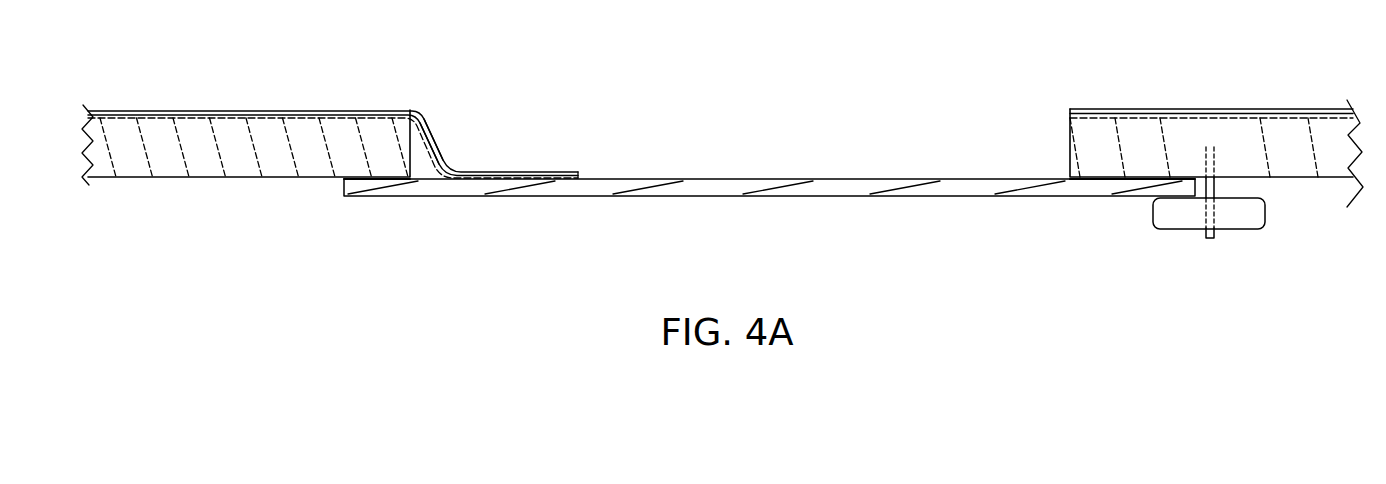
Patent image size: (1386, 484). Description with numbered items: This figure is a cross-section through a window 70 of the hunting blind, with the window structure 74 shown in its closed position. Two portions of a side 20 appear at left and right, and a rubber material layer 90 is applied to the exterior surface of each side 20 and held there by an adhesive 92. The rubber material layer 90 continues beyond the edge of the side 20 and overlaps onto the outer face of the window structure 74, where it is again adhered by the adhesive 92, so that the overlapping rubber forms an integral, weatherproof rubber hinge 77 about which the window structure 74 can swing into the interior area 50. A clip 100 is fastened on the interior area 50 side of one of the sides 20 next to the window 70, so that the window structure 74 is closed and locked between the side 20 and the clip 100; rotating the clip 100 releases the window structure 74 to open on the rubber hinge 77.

The side 20 is at (233, 172).
The interior area 50 is at (334, 275).
The window 70 is at (824, 66).
The window structure 74 is at (693, 186).
The rubber hinge 77 is at (427, 137).
The rubber material layer 90 is at (293, 110).
The adhesive 92 is at (158, 113).
The clip 100 is at (1232, 217).